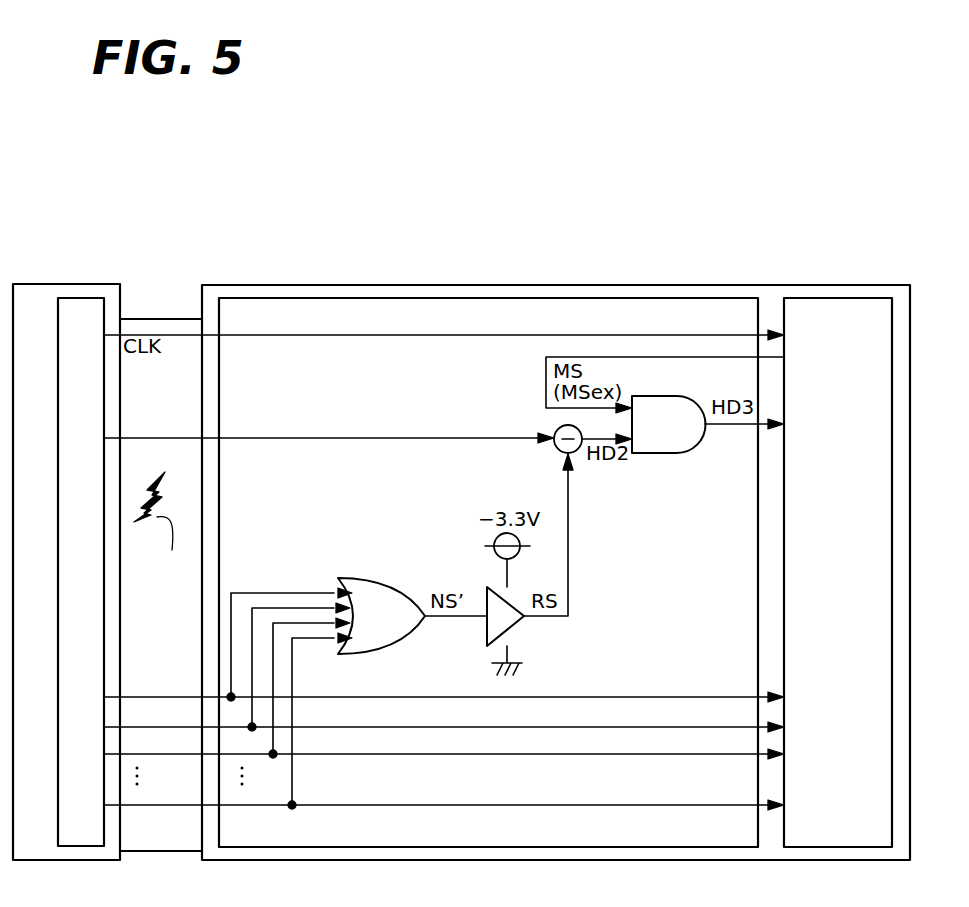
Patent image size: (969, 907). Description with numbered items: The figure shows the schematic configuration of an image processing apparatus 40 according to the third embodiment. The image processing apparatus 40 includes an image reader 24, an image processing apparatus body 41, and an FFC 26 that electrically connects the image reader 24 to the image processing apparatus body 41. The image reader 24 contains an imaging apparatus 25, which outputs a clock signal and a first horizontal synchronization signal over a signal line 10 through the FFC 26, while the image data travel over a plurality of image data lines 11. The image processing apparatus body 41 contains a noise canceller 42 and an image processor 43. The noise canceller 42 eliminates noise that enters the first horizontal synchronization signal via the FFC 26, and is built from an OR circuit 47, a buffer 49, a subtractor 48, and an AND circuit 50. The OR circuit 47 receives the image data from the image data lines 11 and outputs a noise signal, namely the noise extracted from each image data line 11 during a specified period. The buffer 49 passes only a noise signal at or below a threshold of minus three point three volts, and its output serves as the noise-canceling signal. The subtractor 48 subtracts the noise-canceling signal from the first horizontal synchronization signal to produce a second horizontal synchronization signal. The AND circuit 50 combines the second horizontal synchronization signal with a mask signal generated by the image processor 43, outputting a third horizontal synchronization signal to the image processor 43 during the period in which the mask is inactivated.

The image processing apparatus 40 is at (57, 119).
The image reader 24 is at (48, 284).
The imaging apparatus 25 is at (96, 298).
The FFC 26 is at (152, 319).
The HD1 signal line 10 is at (182, 438).
The image data lines 11 is at (178, 697).
The image processing apparatus body 41 is at (657, 285).
The noise canceller 42 is at (714, 298).
The image processor 43 is at (842, 298).
The OR circuit 47 is at (380, 578).
The subtractor 48 is at (556, 428).
The buffer 49 is at (487, 587).
The AND circuit 50 is at (665, 453).